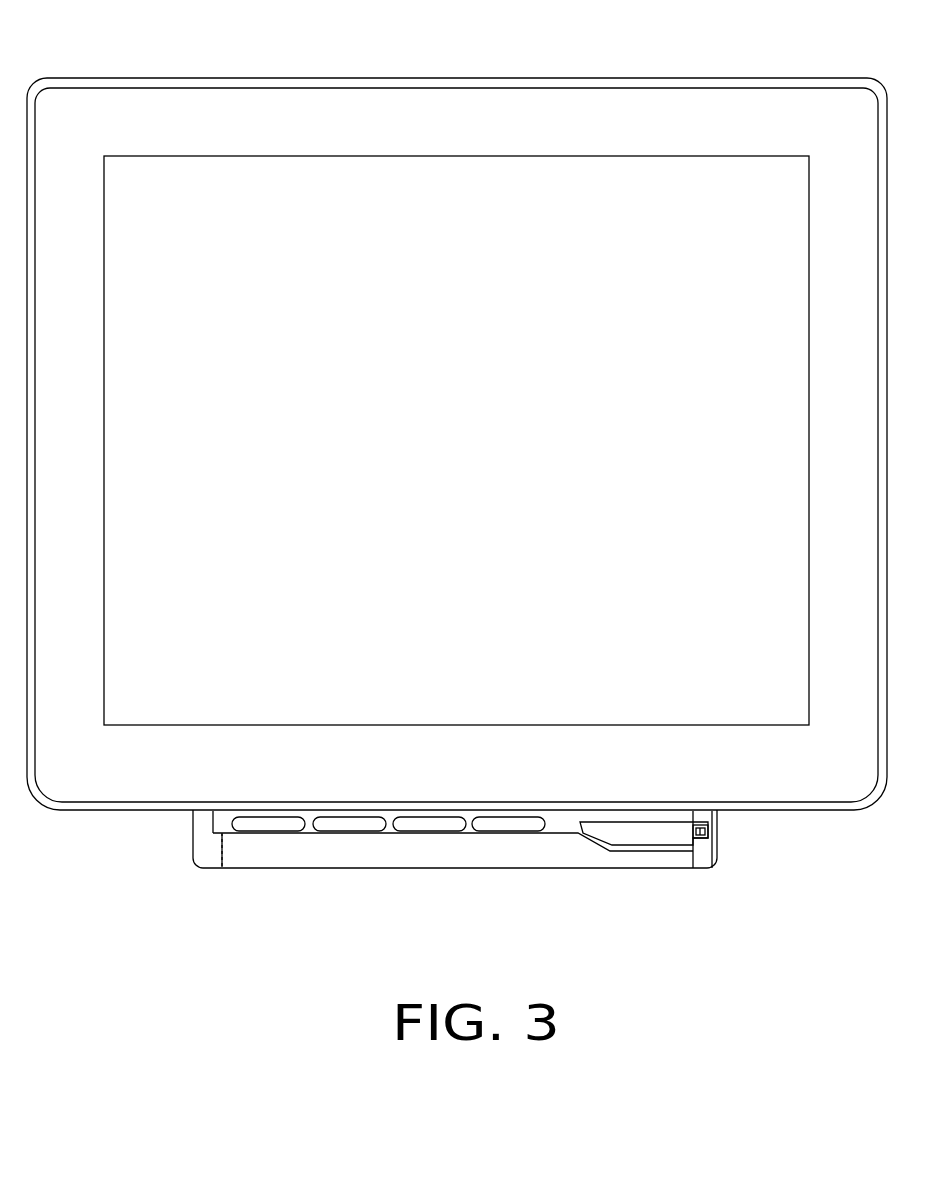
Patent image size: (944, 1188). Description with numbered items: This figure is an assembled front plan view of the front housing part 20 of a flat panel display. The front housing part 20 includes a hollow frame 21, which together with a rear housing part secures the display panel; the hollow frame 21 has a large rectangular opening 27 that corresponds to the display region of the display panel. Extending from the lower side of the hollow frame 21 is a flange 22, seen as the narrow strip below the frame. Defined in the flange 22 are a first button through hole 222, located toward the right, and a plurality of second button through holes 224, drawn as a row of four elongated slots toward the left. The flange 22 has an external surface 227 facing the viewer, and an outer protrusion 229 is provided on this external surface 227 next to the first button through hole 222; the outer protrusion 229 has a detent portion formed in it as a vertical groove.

The front housing part 20 is at (457, 488).
The hollow frame 21 is at (246, 122).
The opening 27 is at (597, 195).
The flange 22 is at (428, 889).
The second button through holes 224 is at (193, 823).
The external surface 227 is at (273, 852).
The first button through hole 222 is at (638, 832).
The outer protrusion 229 is at (708, 832).